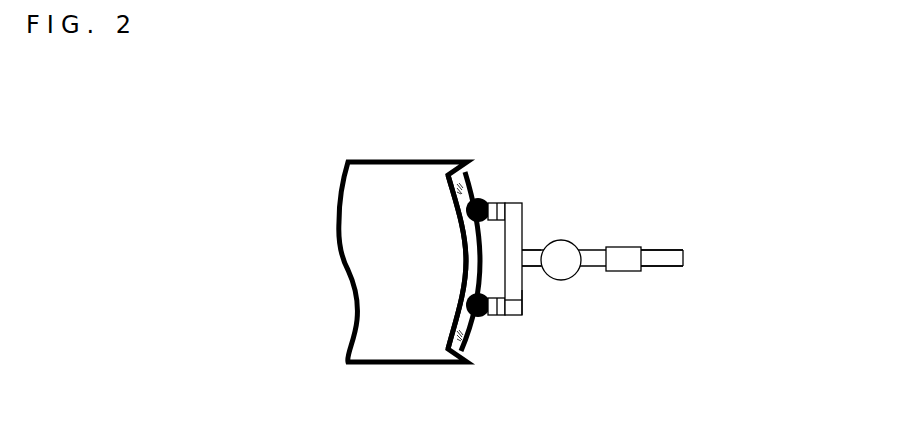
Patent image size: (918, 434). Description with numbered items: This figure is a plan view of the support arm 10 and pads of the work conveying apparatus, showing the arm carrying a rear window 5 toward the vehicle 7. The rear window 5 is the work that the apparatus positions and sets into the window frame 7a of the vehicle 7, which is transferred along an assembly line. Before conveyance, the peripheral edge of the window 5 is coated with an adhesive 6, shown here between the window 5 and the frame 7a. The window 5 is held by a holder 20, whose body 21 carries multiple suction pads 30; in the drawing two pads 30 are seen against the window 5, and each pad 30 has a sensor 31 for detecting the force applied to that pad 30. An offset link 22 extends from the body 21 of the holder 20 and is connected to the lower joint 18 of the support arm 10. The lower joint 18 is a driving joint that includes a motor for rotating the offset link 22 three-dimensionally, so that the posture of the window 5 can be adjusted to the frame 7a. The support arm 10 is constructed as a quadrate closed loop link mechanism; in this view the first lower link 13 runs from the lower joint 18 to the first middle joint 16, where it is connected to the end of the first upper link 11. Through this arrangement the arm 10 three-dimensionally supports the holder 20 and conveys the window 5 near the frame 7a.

The vehicle 7 is at (396, 159).
The window frame 7a is at (466, 237).
The adhesive 6 is at (457, 186).
The rear window 5 is at (483, 270).
The suction pad 30 is at (479, 200).
The sensor 31 is at (490, 203).
The holder 20 is at (523, 212).
The body of the holder 21 is at (522, 302).
The offset link 22 is at (530, 264).
The lower joint 18 is at (562, 248).
The first lower link 13 is at (595, 267).
The first middle joint 16 is at (625, 254).
The first upper link 11 is at (663, 267).
The support arm 10 is at (594, 273).